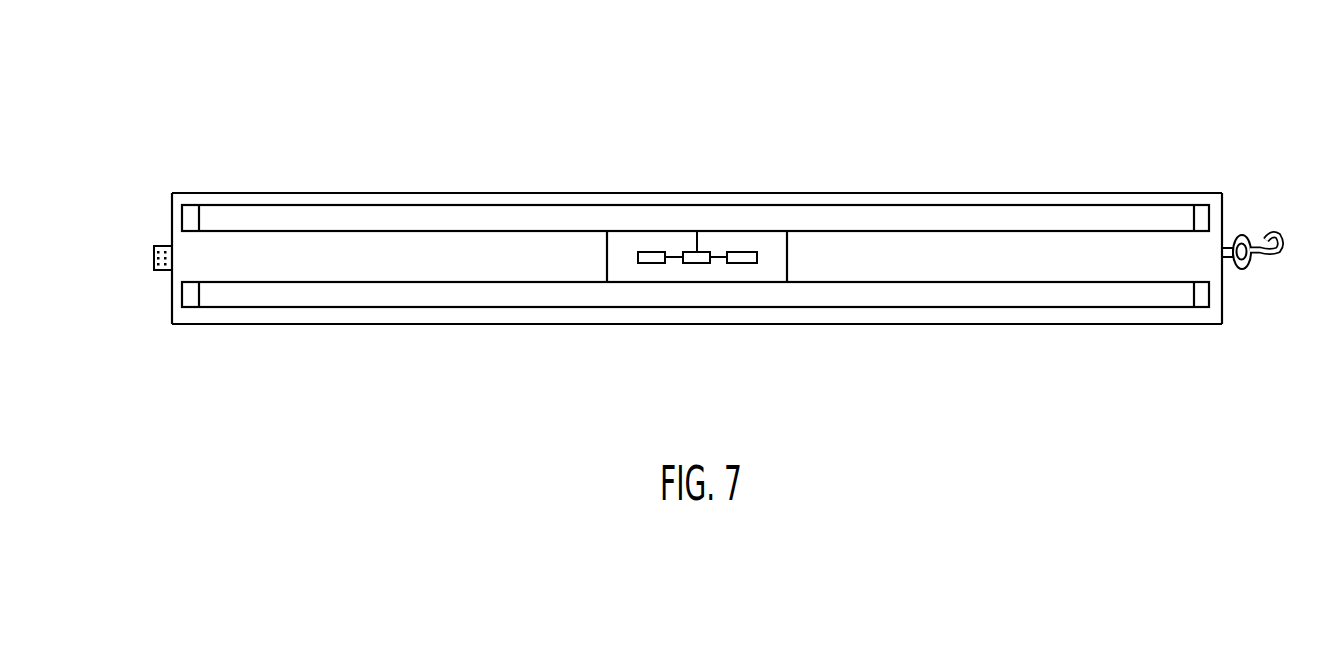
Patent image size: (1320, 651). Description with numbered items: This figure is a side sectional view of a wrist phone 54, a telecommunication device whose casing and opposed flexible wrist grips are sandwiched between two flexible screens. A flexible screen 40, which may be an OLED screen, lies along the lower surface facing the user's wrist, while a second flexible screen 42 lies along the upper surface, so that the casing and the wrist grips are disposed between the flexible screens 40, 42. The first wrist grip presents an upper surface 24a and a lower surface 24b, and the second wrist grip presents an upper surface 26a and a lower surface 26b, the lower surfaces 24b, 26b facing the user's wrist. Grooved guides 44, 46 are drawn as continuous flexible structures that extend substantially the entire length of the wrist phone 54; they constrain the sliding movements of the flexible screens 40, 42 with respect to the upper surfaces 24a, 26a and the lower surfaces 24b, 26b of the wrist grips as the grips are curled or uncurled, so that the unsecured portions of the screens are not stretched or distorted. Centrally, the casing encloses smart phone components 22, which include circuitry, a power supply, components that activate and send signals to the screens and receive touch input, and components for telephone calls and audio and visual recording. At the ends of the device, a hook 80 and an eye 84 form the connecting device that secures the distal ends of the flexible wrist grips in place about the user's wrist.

The wrist phone 54 is at (650, 165).
The second flexible screen 42 is at (1115, 218).
The flexible screen 40 is at (1113, 295).
The grooved guide 46 is at (868, 205).
The grooved guide 44 is at (868, 308).
The upper surface of wrist grip 24a is at (405, 230).
The lower surface of wrist grip 24b is at (403, 285).
The upper surface of wrist grip 26a is at (1003, 232).
The lower surface of wrist grip 26b is at (1003, 282).
The smart phone components 22 is at (651, 263).
The hook 80 is at (1258, 262).
The eye 84 is at (153, 258).